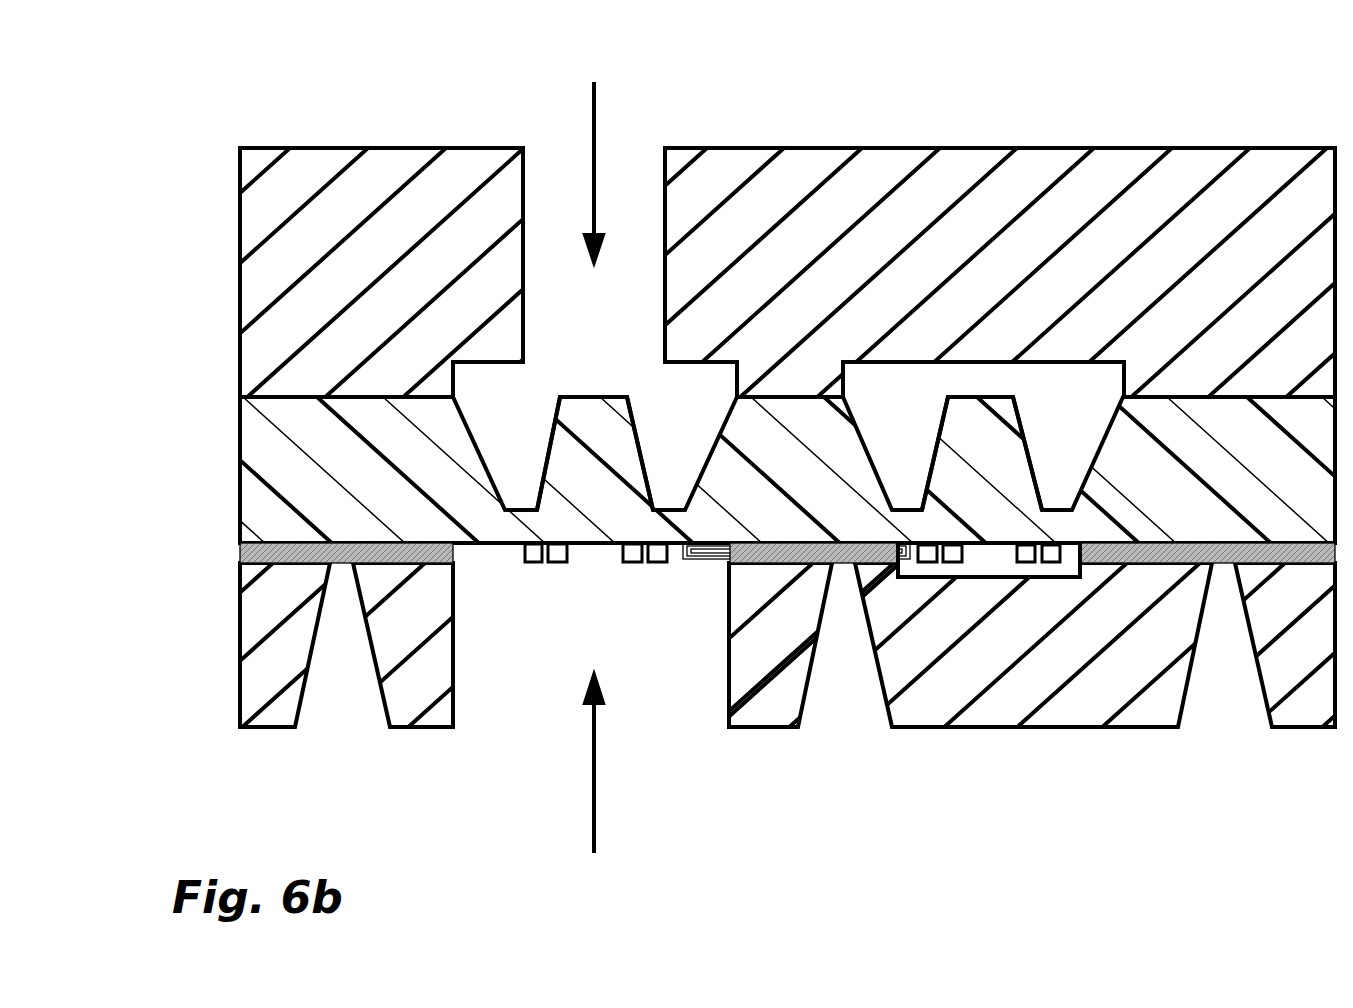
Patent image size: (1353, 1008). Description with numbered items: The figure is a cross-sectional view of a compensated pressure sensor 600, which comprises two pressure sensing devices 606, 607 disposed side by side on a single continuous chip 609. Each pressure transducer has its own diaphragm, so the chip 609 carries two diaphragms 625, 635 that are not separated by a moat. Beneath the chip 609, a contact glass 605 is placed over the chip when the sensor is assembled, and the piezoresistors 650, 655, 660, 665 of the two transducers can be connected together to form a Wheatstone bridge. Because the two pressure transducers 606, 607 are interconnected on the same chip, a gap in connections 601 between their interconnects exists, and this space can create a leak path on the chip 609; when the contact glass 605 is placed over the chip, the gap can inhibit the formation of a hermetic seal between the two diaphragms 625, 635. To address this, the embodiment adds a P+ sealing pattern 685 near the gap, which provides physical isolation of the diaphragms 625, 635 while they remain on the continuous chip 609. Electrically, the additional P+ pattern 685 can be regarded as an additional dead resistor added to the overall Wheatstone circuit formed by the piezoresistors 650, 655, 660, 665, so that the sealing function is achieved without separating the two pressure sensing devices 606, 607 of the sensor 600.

The sensor 600 is at (198, 60).
The pressure sensing device 606 is at (547, 118).
The pressure sensing device 607 is at (1030, 112).
The continuous chip 609 is at (240, 465).
The diaphragm 625 is at (618, 433).
The diaphragm 635 is at (1007, 455).
The contact glass 605 is at (240, 618).
The piezoresistor 650 is at (538, 564).
The piezoresistor 655 is at (630, 564).
The gap in connections 601 is at (717, 564).
The P+ sealing pattern 685 is at (847, 564).
The piezoresistor 660 is at (925, 564).
The piezoresistor 665 is at (1027, 564).